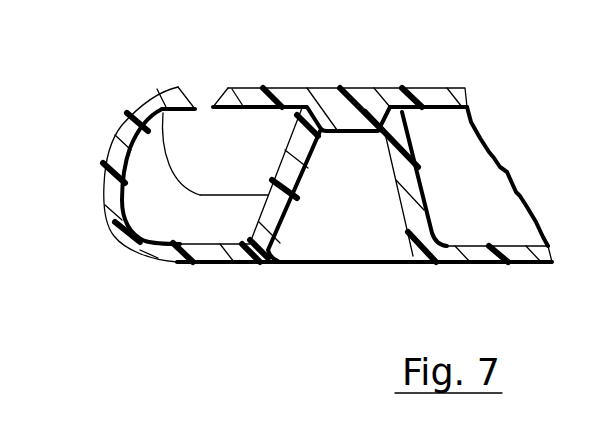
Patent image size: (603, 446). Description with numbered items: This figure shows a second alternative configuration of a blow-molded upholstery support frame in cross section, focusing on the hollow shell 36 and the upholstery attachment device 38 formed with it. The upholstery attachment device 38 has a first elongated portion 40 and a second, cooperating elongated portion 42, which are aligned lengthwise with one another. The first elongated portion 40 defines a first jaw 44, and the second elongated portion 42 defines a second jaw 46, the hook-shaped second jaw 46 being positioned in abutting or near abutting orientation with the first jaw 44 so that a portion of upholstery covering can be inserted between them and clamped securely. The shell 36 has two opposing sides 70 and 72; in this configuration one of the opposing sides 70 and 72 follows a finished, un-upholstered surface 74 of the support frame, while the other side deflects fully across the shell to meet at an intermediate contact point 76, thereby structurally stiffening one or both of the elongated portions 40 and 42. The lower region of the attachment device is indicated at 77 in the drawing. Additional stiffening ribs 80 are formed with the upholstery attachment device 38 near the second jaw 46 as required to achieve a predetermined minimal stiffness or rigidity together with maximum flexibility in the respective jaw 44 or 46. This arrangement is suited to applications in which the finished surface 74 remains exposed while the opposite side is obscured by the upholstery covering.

The shell 36 is at (495, 170).
The upholstery attachment device 38 is at (105, 252).
The first elongated portion 40 is at (258, 94).
The second elongated portion 42 is at (114, 137).
The first jaw 44 is at (233, 108).
The second jaw 46 is at (177, 112).
The side 70 is at (432, 88).
The side 72 is at (487, 264).
The finished, un-upholstered surface 74 is at (333, 84).
The contact point 76 is at (358, 133).
The bottom surface 77 is at (371, 268).
The stiffening ribs 80 is at (187, 207).